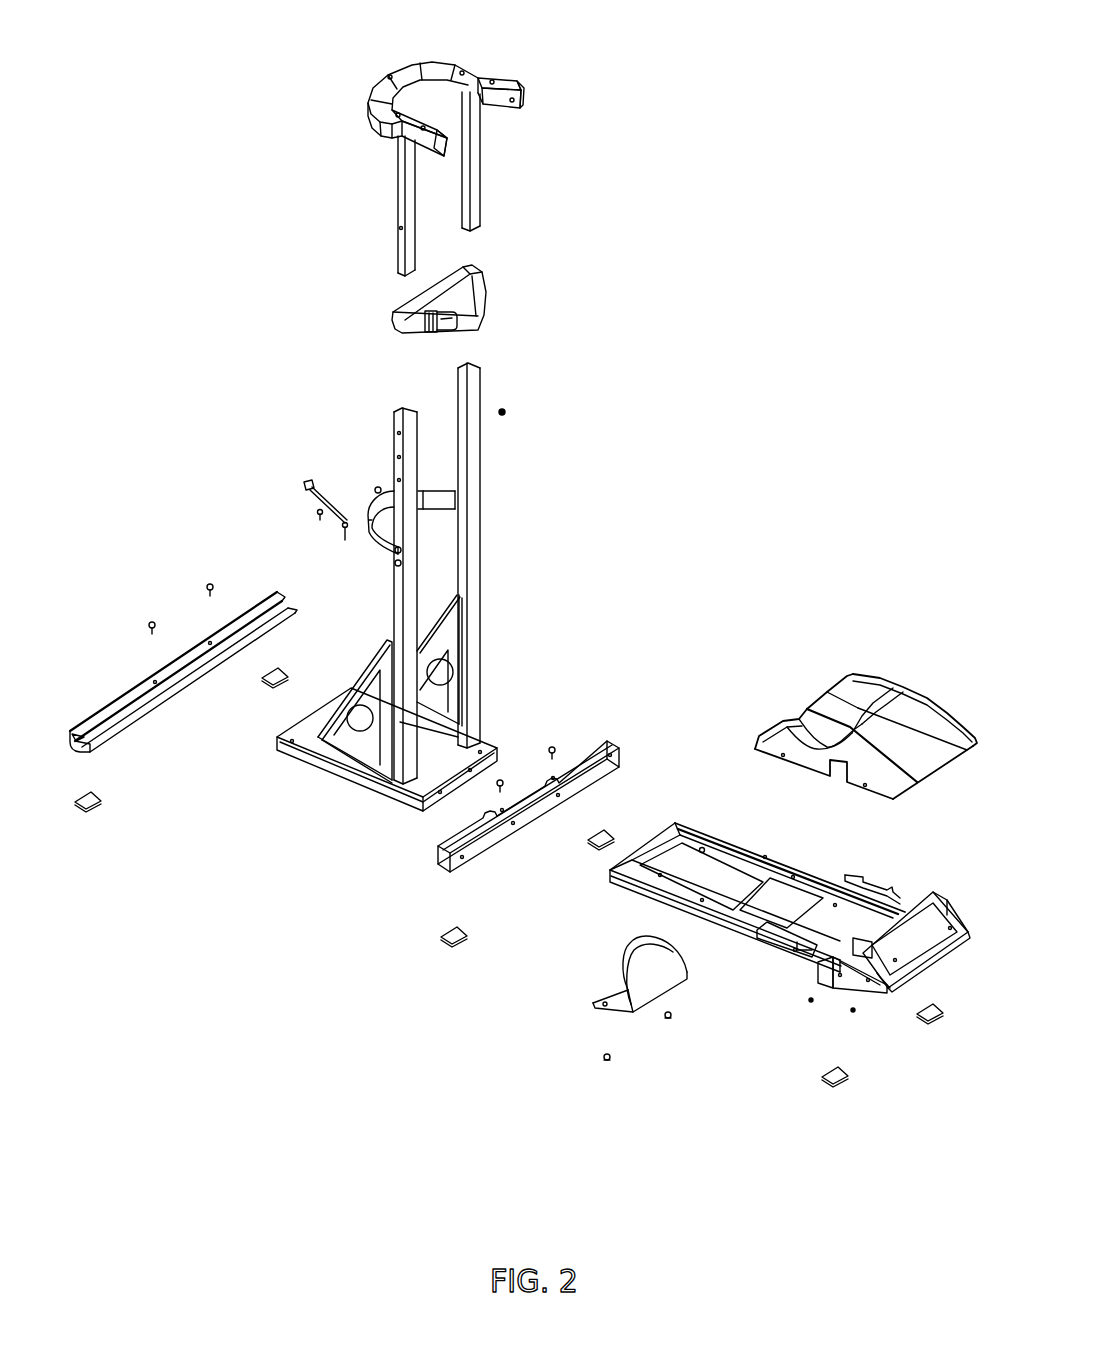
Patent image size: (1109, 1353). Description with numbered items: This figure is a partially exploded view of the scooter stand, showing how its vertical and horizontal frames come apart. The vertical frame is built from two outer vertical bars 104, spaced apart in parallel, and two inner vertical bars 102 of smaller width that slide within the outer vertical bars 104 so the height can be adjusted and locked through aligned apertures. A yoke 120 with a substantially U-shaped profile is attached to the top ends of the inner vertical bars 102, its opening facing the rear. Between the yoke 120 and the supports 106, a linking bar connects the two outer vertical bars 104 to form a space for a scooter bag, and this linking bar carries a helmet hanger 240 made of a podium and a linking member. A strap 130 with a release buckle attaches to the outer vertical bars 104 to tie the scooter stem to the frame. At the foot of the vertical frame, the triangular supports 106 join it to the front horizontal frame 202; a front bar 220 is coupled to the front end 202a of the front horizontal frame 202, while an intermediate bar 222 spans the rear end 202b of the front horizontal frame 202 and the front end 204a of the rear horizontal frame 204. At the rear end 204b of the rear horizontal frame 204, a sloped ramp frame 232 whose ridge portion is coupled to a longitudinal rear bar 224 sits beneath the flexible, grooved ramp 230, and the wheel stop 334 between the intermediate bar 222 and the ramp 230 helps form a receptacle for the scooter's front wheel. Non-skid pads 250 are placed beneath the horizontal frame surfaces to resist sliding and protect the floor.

The inner vertical bar 102 is at (473, 162).
The outer vertical bar 104 is at (475, 452).
The support 106 is at (384, 652).
The yoke 120 is at (510, 82).
The strap 130 is at (480, 320).
The front horizontal frame 202 is at (357, 798).
The front end 202a is at (273, 757).
The base plate right side face 202b is at (417, 798).
The rear horizontal frame 204 is at (704, 905).
The front end 204a is at (637, 850).
The base frame right rail 204b is at (800, 957).
The front bar 220 is at (137, 712).
The intermediate bar 222 is at (595, 750).
The rear bar 224 is at (840, 960).
The ramp 230 is at (853, 688).
The ramp frame 232 is at (900, 943).
The helmet hanger 240 is at (312, 482).
The non-skid pad 250 is at (273, 670).
The cover 334 is at (637, 968).